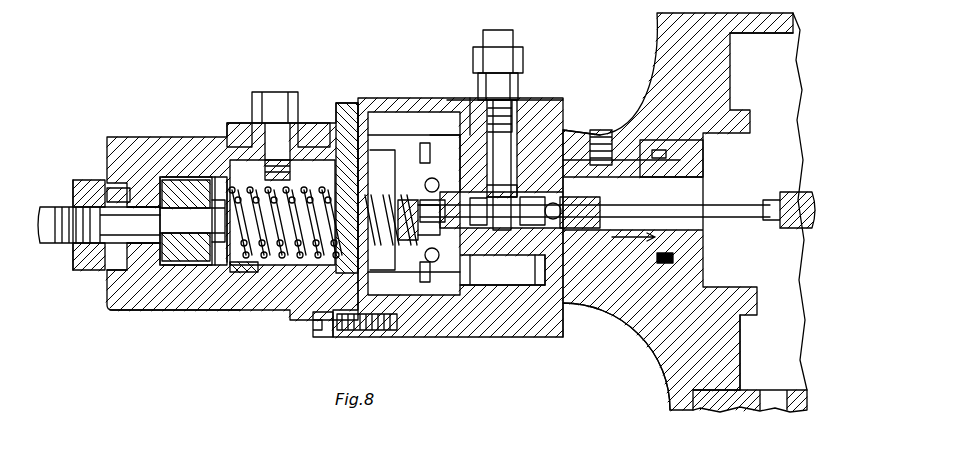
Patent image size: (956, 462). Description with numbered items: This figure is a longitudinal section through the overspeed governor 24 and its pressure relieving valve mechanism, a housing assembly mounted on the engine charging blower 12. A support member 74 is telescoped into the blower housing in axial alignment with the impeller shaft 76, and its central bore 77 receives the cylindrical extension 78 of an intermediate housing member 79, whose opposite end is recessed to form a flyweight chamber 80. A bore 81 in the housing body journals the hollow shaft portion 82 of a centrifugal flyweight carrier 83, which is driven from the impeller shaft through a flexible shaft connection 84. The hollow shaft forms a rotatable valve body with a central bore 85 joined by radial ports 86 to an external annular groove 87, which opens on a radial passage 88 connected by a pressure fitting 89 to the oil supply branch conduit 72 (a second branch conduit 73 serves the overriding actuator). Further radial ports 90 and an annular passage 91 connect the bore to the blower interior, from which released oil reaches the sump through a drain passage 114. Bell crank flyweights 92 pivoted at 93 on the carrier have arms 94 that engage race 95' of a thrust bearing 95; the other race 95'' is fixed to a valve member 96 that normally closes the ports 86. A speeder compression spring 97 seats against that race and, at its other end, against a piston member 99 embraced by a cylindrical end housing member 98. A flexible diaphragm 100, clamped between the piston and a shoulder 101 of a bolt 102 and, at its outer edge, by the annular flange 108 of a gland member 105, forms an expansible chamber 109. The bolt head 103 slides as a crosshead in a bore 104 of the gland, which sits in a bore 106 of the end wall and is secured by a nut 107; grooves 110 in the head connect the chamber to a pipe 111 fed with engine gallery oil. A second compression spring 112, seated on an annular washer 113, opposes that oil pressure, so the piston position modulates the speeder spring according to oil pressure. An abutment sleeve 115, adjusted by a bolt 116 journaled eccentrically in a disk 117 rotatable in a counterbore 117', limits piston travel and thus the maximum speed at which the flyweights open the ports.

The engine charging blower 12 is at (785, 17).
The overspeed governor 24 is at (341, 348).
The branch conduit 72 is at (490, 40).
The second branch conduit 73 is at (795, 40).
The support member 74 is at (725, 352).
The impeller shaft 76 is at (769, 318).
The central bore 77 is at (690, 268).
The cylindrical extension 78 is at (690, 170).
The intermediate housing member 79 is at (540, 118).
The flyweight chamber 80 is at (460, 104).
The bore 81 is at (531, 270).
The hollow shaft portion 82 is at (640, 213).
The centrifugal flyweight carrier 83 is at (453, 211).
The flexible shaft connection 84 is at (710, 212).
The central bore 85 is at (540, 211).
The radial ports 86 is at (502, 183).
The annular groove 87 is at (502, 270).
The passage 88 is at (527, 138).
The pressure fitting 89 is at (518, 85).
The radial ports 90 is at (590, 213).
The annular passage 91 is at (622, 183).
The centrifugal flyweights 92 is at (414, 209).
The pivot 93 is at (416, 218).
The arms 94 is at (437, 158).
The antifriction thrust bearing 95 is at (418, 225).
The bearing race 95' is at (391, 210).
The bearing race 95'' is at (404, 238).
The valve member 96 is at (502, 165).
The compression spring 97 is at (381, 210).
The cylindrical end housing member 98 is at (258, 272).
The piston member 99 is at (221, 268).
The flexible diaphragm 100 is at (193, 275).
The shoulder 101 is at (160, 258).
The bolt 102 is at (187, 221).
The bolt head 103 is at (110, 282).
The bore 104 is at (140, 200).
The gland member 105 is at (73, 255).
The bore 106 is at (110, 188).
The nut 107 is at (86, 270).
The annular flange 108 is at (165, 290).
The expansible chamber 109 is at (163, 205).
The grooves 110 is at (192, 221).
The pipe 111 is at (55, 213).
The second compression spring 112 is at (294, 290).
The annular spring seating washer 113 is at (343, 128).
The drain passage 114 is at (778, 400).
The abutment sleeve 115 is at (240, 282).
The bolt 116 is at (272, 108).
The disk 117 is at (236, 122).
The counterbore 117' is at (319, 112).